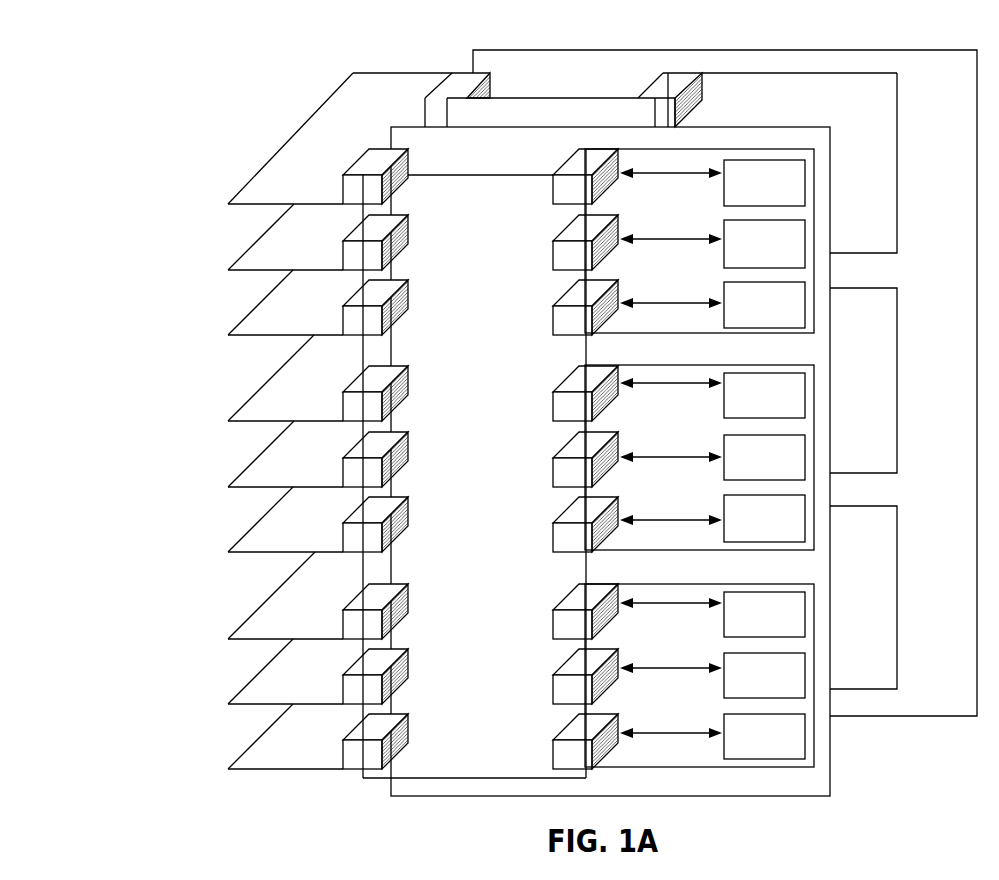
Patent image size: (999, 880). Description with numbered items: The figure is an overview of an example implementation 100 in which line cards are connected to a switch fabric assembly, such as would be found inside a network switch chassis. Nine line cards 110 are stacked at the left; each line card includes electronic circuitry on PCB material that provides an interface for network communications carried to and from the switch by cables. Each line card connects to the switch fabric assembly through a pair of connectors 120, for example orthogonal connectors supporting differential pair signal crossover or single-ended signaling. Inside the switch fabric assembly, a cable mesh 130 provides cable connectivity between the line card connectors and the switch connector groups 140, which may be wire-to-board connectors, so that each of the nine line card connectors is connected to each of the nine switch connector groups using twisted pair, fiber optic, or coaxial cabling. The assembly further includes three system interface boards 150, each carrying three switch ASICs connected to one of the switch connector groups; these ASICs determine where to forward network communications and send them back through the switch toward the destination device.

The example implementation 100 is at (138, 49).
The line cards 110 is at (243, 149).
The pair of connectors 120 is at (365, 770).
The cable mesh 130 is at (462, 509).
The switch connector groups 140 is at (598, 775).
The system interface boards 150 is at (756, 771).